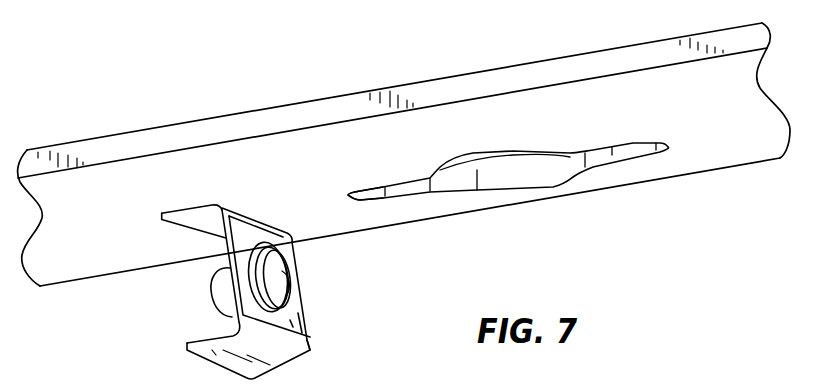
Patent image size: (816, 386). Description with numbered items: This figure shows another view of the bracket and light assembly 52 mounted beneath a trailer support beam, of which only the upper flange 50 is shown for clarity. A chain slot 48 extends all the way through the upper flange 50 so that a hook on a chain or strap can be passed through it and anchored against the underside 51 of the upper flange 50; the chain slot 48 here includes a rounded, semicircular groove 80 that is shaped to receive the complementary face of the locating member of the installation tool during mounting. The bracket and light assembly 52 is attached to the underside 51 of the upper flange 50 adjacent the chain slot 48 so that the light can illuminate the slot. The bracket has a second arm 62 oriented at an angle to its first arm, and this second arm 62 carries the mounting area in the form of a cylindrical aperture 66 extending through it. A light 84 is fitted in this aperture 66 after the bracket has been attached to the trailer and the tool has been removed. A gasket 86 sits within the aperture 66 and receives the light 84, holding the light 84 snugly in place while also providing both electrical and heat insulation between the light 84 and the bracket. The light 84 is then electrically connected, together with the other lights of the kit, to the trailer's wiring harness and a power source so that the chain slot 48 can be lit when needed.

The upper flange 50 is at (131, 138).
The underside 51 is at (712, 138).
The chain slot 48 is at (563, 170).
The semicircular groove 80 is at (368, 198).
The bracket and light assembly 52 is at (271, 295).
The second arm 62 is at (222, 231).
The aperture 66 is at (214, 350).
The light 84 is at (280, 266).
The gasket 86 is at (338, 357).